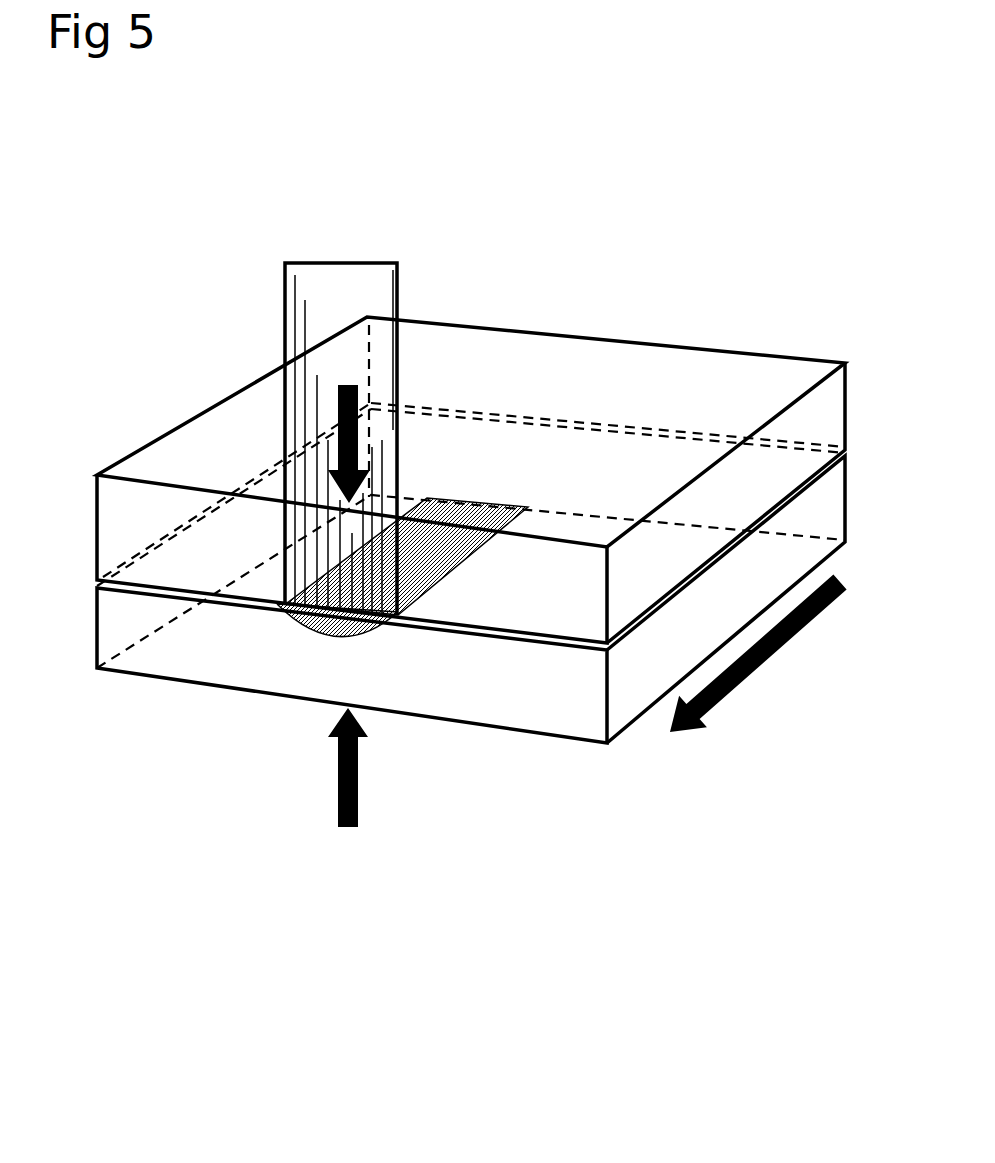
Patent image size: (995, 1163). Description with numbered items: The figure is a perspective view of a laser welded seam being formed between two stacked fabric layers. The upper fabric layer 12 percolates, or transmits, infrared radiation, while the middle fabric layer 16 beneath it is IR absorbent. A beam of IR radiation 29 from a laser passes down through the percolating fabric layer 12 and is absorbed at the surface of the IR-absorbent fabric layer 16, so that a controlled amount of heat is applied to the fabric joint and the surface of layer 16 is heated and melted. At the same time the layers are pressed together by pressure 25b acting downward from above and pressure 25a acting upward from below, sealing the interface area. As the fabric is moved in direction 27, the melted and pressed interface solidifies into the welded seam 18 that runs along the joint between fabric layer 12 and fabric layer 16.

The fabric layer 12 is at (142, 470).
The IR absorbent fabric layer 16 is at (140, 657).
The welded seam 18 is at (480, 512).
The pressure 25a is at (357, 830).
The pressure 25b is at (345, 385).
The direction 27 is at (737, 690).
The IR radiation 29 is at (303, 283).